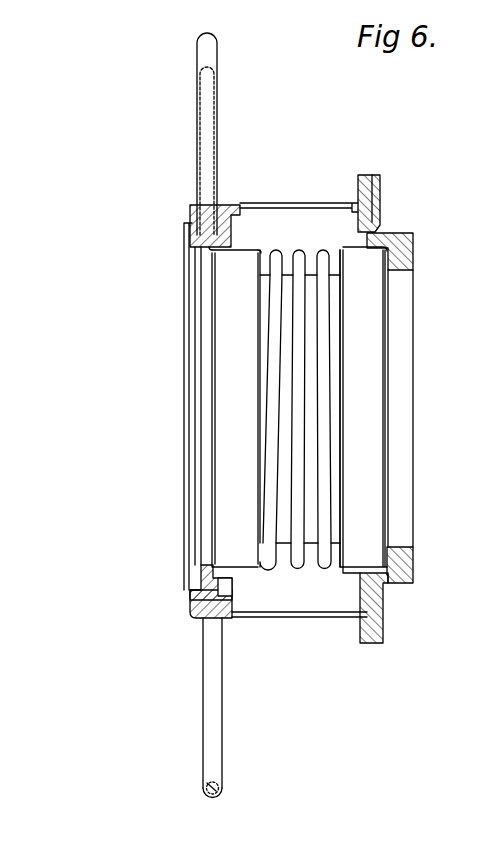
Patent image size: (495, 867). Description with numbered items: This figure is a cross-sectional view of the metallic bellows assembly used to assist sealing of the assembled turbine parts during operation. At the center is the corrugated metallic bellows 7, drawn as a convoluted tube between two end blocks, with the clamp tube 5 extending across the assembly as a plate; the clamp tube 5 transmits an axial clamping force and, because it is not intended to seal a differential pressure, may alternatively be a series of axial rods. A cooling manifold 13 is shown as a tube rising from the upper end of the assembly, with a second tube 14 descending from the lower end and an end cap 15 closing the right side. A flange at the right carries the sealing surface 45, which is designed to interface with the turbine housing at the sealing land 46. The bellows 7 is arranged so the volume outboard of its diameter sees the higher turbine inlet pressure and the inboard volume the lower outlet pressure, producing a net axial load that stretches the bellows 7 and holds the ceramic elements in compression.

The clamp tube 5 is at (284, 210).
The corrugated metallic bellows 7 is at (320, 568).
The cooling manifold 13 is at (199, 78).
The lower tube 14 is at (215, 790).
The end cap 15 is at (413, 252).
The sealing surface 45 is at (378, 194).
The sealing land 46 is at (139, 427).